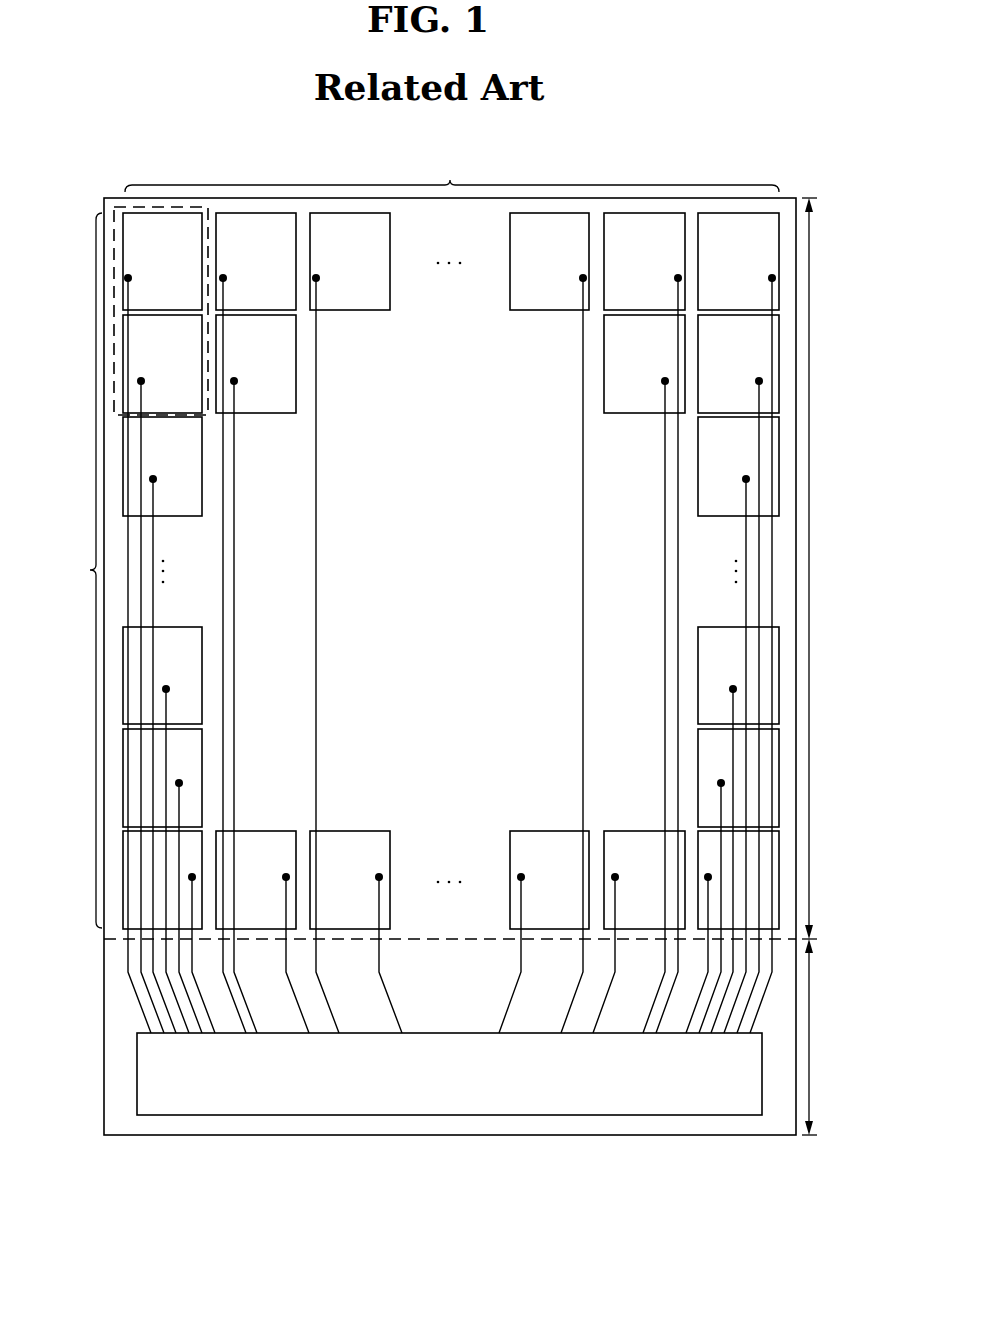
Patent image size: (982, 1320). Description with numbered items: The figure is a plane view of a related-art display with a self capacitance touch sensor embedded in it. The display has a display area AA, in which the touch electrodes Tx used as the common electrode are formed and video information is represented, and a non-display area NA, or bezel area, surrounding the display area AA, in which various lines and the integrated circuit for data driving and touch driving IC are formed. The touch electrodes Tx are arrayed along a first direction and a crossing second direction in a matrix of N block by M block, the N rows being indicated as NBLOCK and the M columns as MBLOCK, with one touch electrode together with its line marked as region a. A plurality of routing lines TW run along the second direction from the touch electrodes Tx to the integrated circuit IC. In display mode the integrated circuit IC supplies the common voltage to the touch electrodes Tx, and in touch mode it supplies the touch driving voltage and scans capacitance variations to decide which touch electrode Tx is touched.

The touch block region (enlarged portion) a is at (161, 205).
The touch electrode Tx is at (255, 213).
The routing line TW is at (128, 290).
The M block MBLOCK is at (452, 174).
The N block NBLOCK is at (60, 570).
The display area AA is at (820, 568).
The non-display area NA is at (820, 1037).
The integrated circuit for data driving and touch driving IC is at (623, 1110).